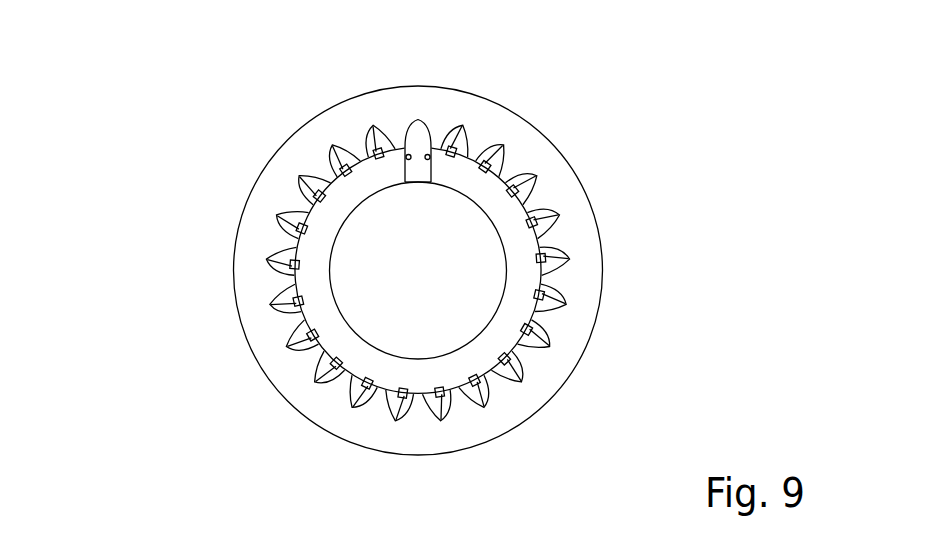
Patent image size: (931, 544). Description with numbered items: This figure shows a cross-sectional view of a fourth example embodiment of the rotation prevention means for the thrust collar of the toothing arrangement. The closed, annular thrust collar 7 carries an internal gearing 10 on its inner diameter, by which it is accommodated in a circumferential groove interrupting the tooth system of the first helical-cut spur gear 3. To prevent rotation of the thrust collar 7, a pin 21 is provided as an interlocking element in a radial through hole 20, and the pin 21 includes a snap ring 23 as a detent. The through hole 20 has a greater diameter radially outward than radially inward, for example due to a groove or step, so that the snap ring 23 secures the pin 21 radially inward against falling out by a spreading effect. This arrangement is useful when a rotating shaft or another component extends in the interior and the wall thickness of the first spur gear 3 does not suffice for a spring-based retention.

The first helical-cut spur gear 3 is at (315, 247).
The thrust collar 7 is at (298, 159).
The internal gearing 10 is at (417, 156).
The through hole 20 is at (437, 170).
The pin 21 is at (425, 180).
The snap ring 23 is at (436, 152).